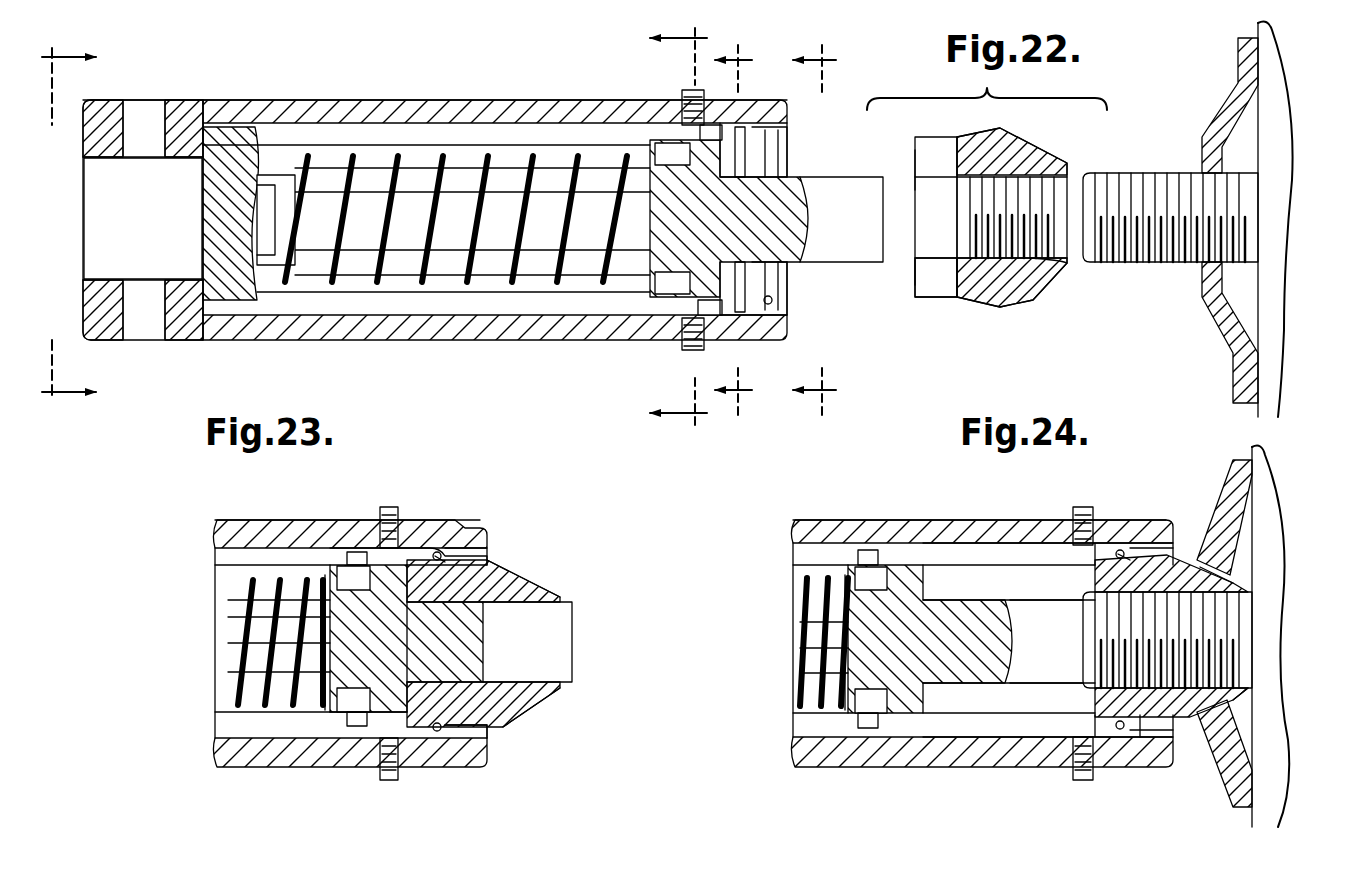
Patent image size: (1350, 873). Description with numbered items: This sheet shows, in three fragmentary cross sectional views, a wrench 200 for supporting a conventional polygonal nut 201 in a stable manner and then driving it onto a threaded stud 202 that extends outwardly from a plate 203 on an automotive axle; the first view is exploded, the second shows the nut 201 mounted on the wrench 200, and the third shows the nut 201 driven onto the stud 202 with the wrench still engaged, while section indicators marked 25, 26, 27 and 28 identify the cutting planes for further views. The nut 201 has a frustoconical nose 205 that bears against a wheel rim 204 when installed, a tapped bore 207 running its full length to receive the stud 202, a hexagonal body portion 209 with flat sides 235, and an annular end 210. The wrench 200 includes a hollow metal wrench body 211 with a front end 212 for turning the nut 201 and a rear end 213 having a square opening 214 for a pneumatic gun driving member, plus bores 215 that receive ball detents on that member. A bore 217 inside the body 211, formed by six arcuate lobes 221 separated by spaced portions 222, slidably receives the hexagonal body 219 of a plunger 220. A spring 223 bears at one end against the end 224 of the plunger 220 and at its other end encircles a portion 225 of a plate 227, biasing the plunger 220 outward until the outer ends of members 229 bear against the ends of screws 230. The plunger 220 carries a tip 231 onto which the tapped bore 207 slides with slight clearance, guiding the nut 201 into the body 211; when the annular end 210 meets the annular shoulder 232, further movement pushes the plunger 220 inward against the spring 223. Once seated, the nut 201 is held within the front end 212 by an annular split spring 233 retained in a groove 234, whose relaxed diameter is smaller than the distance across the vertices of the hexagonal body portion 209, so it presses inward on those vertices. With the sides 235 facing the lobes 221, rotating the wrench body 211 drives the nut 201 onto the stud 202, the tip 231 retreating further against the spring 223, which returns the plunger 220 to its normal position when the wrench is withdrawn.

In FIG. 22, the section line 25- 25 is at (816, 228).
In FIG. 22, the section line 26- 26 is at (737, 228).
In FIG. 22, the section line 27- 27 is at (652, 228).
In FIG. 22, the section line 28- 28 is at (64, 227).
In FIG. 22, the wrench 200 is at (356, 76).
In FIG. 23, the wrench 200 is at (244, 509).
In FIG. 24, the wrench 200 is at (834, 504).
In FIG. 22, the polygonal nut 201 is at (995, 300).
In FIG. 23, the polygonal nut 201 is at (505, 561).
In FIG. 24, the polygonal nut 201 is at (1210, 736).
In FIG. 22, the threaded stud 202 is at (1165, 173).
In FIG. 24, the threaded stud 202 is at (1090, 609).
In FIG. 22, the plate 203 is at (1272, 76).
In FIG. 24, the plate 203 is at (1270, 486).
In FIG. 22, the wheel rim 204 is at (1212, 120).
In FIG. 24, the wheel rim 204 is at (1222, 521).
In FIG. 22, the frustoconical nose 205 is at (1040, 292).
In FIG. 23, the frustoconical nose 205 is at (550, 581).
In FIG. 24, the frustoconical nose 205 is at (1245, 713).
In FIG. 22, the tapped bore 207 is at (1068, 262).
In FIG. 23, the tapped bore 207 is at (530, 681).
In FIG. 24, the tapped bore 207 is at (1250, 596).
In FIG. 22, the hexagonal body portion 209 is at (940, 137).
In FIG. 23, the hexagonal body portion 209 is at (462, 739).
In FIG. 24, the hexagonal body portion 209 is at (1150, 738).
In FIG. 22, the annular end 210 is at (915, 283).
In FIG. 23, the annular end 210 is at (380, 591).
In FIG. 24, the annular end 210 is at (1055, 686).
In FIG. 22, the wrench body 211 is at (445, 105).
In FIG. 23, the wrench body 211 is at (230, 769).
In FIG. 24, the wrench body 211 is at (815, 769).
In FIG. 22, the front end 212 is at (753, 122).
In FIG. 23, the front end 212 is at (450, 553).
In FIG. 24, the front end 212 is at (1135, 546).
In FIG. 22, the rear end 213 is at (86, 118).
In FIG. 22, the square opening 214 is at (105, 170).
In FIG. 22, the bores 215 is at (150, 150).
In FIG. 22, the bore 217 is at (512, 112).
In FIG. 23, the bore 217 is at (215, 561).
In FIG. 24, the bore 217 is at (795, 561).
In FIG. 22, the hexagonal body 219 is at (722, 318).
In FIG. 23, the hexagonal body 219 is at (365, 551).
In FIG. 24, the hexagonal body 219 is at (885, 551).
In FIG. 22, the plunger 220 is at (548, 312).
In FIG. 23, the plunger 220 is at (300, 641).
In FIG. 24, the plunger 220 is at (840, 646).
In FIG. 22, the arcuate sides or lobes 221 is at (425, 285).
In FIG. 23, the arcuate sides or lobes 221 is at (218, 571).
In FIG. 24, the arcuate sides or lobes 221 is at (985, 566).
In FIG. 22, the spaced portions 222 is at (400, 125).
In FIG. 23, the spaced portions 222 is at (220, 599).
In FIG. 24, the spaced portions 222 is at (975, 561).
In FIG. 22, the spring 223 is at (335, 318).
In FIG. 23, the spring 223 is at (225, 619).
In FIG. 24, the spring 223 is at (800, 599).
In FIG. 22, the end 224 is at (640, 160).
In FIG. 23, the end 224 is at (320, 541).
In FIG. 24, the end 224 is at (830, 613).
In FIG. 22, the portion 225 is at (285, 140).
In FIG. 22, the plate 227 is at (218, 128).
In FIG. 22, the members 229 is at (662, 140).
In FIG. 23, the members 229 is at (342, 560).
In FIG. 24, the members 229 is at (865, 563).
In FIG. 22, the screws 230 is at (712, 80).
In FIG. 23, the screws 230 is at (398, 516).
In FIG. 24, the screws 230 is at (1090, 526).
In FIG. 22, the tip 231 is at (858, 231).
In FIG. 23, the tip 231 is at (548, 659).
In FIG. 24, the tip 231 is at (1048, 652).
In FIG. 22, the annular shoulder 232 is at (748, 275).
In FIG. 23, the annular shoulder 232 is at (425, 681).
In FIG. 22, the annular split spring 233 is at (770, 295).
In FIG. 23, the annular split spring 233 is at (437, 736).
In FIG. 24, the annular split spring 233 is at (1118, 736).
In FIG. 22, the groove 234 is at (785, 305).
In FIG. 23, the groove 234 is at (442, 553).
In FIG. 24, the groove 234 is at (1130, 553).
In FIG. 22, the sides 235 is at (925, 190).